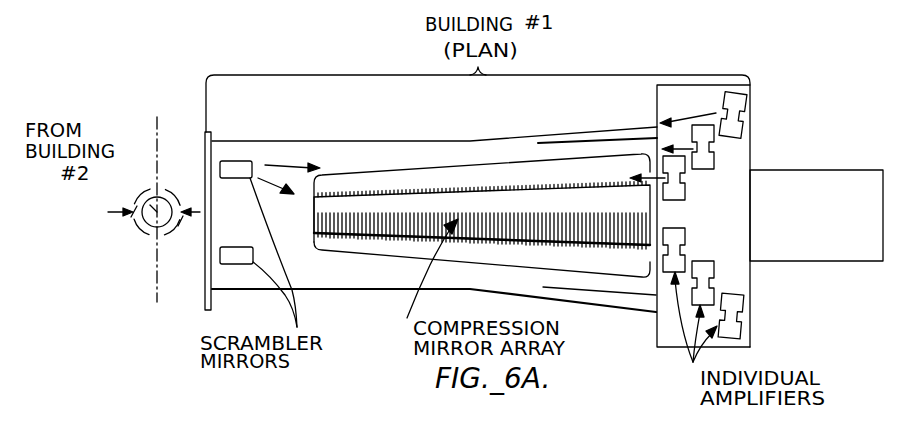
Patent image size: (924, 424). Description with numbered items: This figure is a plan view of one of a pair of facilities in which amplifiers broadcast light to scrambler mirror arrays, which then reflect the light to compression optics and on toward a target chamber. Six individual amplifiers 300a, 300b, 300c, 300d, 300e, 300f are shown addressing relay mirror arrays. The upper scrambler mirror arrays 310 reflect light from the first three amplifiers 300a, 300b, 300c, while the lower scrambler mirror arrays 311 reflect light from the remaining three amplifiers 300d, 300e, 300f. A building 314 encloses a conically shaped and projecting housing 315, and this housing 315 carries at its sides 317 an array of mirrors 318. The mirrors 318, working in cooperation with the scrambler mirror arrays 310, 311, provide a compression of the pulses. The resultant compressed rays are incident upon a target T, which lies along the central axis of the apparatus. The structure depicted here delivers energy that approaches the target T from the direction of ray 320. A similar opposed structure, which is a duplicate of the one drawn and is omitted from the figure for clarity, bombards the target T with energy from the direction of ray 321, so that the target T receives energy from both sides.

The target T is at (138, 196).
The scrambler mirror arrays 310 is at (238, 160).
The scrambler mirror arrays 311 is at (237, 265).
The building 314 is at (405, 141).
The housing 315 is at (520, 217).
The sides 317 is at (519, 188).
The array of mirrors 318 is at (478, 165).
The ray 320 is at (200, 212).
The ray 321 is at (112, 212).
The individual amplifier 300a is at (742, 101).
The individual amplifier 300b is at (708, 160).
The individual amplifier 300c is at (680, 194).
The individual amplifier 300d is at (683, 238).
The individual amplifier 300e is at (710, 271).
The individual amplifier 300f is at (745, 306).